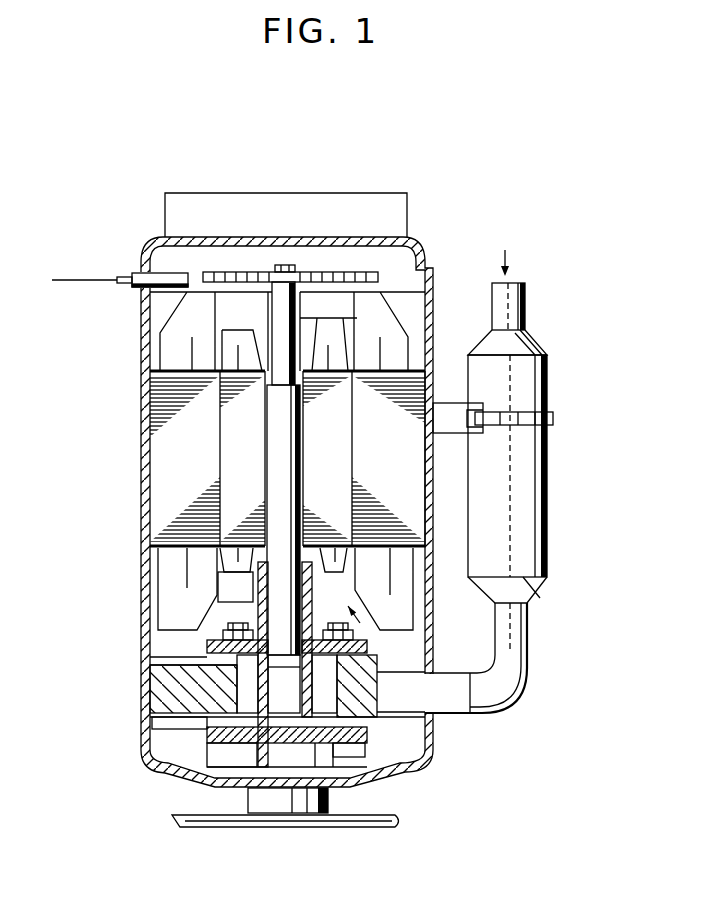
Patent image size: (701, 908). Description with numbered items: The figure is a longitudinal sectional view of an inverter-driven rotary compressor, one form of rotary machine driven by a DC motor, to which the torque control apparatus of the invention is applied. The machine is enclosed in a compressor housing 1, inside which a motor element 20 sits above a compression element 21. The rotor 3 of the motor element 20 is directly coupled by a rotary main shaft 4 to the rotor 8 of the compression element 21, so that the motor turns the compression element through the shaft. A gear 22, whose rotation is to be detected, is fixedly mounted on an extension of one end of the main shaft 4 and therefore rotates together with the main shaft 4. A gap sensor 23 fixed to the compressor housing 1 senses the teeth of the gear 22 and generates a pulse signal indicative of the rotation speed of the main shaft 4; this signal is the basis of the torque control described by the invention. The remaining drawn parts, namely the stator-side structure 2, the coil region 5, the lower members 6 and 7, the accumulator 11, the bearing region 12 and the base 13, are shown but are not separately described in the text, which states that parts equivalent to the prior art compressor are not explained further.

The compressor housing 1 is at (424, 247).
The stator 2 is at (153, 406).
The rotor 3 is at (233, 453).
The rotary main shaft 4 is at (291, 477).
The stator coil end 5 is at (210, 618).
The lower plate 6 is at (248, 742).
The bearing bracket 7 is at (168, 681).
The rotor 8 is at (262, 702).
The accumulator 11 is at (548, 378).
The bearing 12 is at (247, 665).
The mounting base 13 is at (297, 812).
The motor element 20 is at (363, 356).
The compression element 21 is at (384, 655).
The gear 22 is at (255, 270).
The gap sensor 23 is at (140, 272).